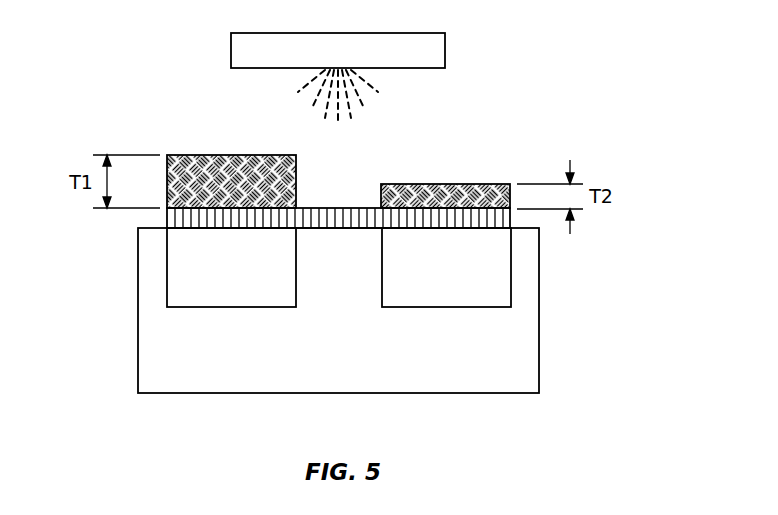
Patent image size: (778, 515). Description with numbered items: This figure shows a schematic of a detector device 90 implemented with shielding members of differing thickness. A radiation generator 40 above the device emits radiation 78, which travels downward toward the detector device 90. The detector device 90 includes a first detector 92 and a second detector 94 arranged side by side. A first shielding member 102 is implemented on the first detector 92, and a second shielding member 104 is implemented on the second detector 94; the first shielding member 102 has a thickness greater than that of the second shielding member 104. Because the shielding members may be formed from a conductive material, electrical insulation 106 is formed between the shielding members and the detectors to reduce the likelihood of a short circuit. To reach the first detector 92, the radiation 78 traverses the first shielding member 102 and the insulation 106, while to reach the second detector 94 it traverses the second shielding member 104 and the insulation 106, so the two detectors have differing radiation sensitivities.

The radiation generator 40 is at (337, 33).
The radiation 78 is at (368, 91).
The detector device 90 is at (338, 393).
The first detector 92 is at (232, 307).
The second detector 94 is at (447, 307).
The first shielding member 102 is at (228, 155).
The second shielding member 104 is at (440, 184).
The electrical insulation 106 is at (313, 207).